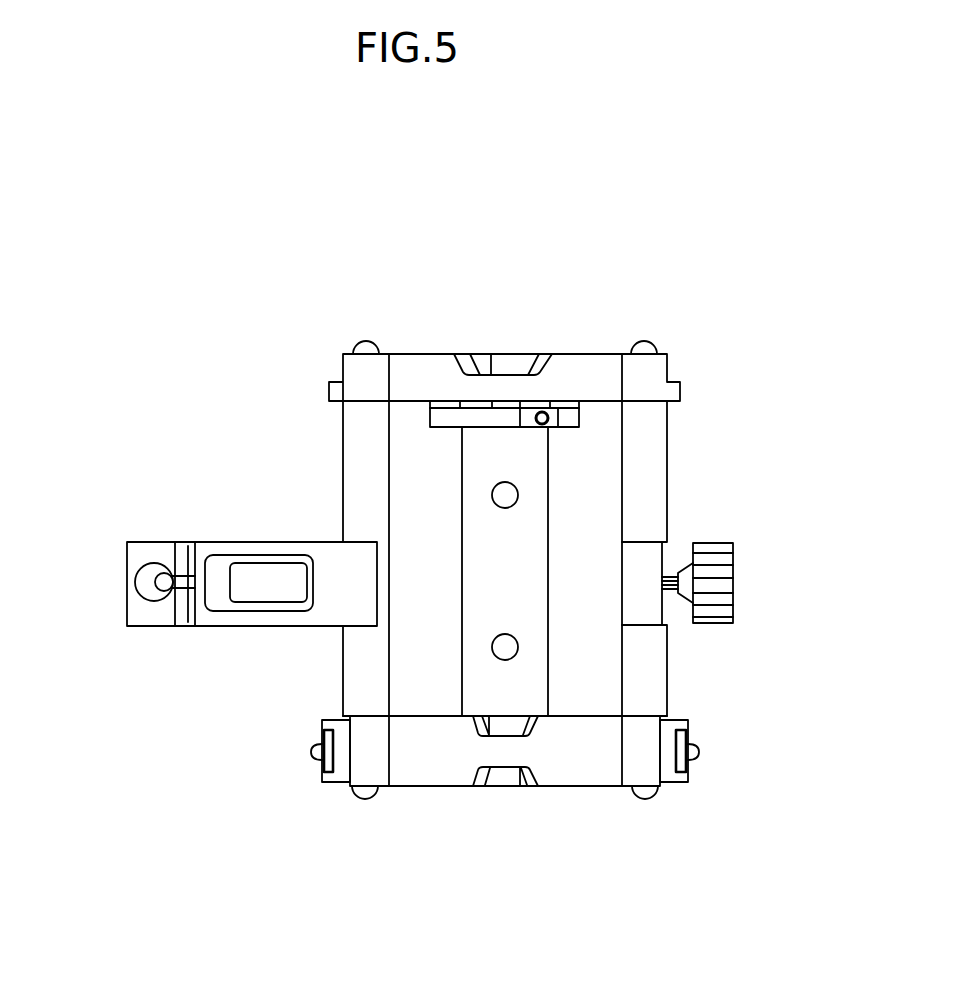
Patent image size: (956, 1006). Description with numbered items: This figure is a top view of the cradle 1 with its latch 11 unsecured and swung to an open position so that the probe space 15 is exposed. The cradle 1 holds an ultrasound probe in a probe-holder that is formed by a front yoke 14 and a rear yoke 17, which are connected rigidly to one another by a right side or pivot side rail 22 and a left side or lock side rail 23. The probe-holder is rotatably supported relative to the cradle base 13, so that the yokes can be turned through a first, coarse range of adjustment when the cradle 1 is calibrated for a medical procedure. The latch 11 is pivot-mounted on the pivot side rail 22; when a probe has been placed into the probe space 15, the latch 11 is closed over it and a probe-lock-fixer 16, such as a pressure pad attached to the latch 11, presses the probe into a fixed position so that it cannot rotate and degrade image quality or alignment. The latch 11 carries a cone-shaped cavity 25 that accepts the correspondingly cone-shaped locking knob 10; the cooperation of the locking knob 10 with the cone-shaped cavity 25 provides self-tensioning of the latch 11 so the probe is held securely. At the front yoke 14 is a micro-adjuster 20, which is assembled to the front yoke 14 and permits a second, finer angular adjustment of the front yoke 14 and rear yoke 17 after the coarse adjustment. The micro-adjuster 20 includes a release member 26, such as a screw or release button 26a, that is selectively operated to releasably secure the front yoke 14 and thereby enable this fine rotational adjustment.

The cradle 1 is at (580, 281).
The locking knob 10 is at (712, 598).
The latch 11 is at (242, 545).
The cradle base 13 is at (461, 548).
The front yoke 14 is at (432, 787).
The probe space 15 is at (578, 512).
The probe-lock-fixer 16 is at (267, 592).
The rear yoke 17 is at (420, 354).
The micro-adjuster 20 is at (345, 775).
The pivot side rail 22 is at (342, 480).
The lock side rail 23 is at (668, 430).
The cone-shaped cavity 25 is at (134, 565).
The release member 26 is at (301, 761).
The release button 26a is at (313, 750).